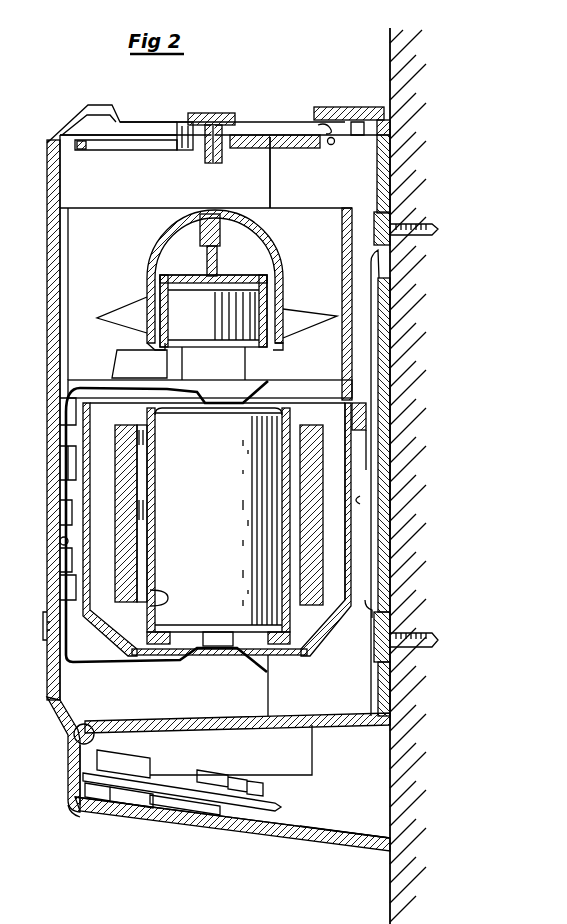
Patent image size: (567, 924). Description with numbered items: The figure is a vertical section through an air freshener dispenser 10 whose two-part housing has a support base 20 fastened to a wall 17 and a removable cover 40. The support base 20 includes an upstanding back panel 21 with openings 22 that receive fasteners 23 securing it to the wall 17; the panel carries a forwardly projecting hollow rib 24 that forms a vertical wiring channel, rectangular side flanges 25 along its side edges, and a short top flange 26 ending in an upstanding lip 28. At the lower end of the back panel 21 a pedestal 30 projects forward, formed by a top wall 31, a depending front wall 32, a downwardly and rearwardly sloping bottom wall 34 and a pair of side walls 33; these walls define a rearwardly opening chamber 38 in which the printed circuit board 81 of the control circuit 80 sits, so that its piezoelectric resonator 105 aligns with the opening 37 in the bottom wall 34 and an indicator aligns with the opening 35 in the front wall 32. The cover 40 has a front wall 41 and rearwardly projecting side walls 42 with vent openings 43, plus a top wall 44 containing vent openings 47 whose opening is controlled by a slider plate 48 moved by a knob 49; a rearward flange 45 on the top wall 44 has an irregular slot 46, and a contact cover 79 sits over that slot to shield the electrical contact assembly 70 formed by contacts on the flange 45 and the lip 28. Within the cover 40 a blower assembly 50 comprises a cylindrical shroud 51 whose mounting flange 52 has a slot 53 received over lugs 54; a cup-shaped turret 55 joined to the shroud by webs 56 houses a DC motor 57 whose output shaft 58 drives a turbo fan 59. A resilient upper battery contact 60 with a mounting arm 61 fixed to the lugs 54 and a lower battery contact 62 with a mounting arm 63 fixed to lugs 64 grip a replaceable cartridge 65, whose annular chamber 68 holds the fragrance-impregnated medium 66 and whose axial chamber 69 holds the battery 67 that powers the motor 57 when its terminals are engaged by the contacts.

The air freshener dispenser 10 is at (306, 68).
The wall 17 is at (390, 42).
The support base 20 is at (88, 812).
The back panel 21 is at (380, 615).
The openings 22 is at (388, 273).
The fasteners 23 is at (413, 218).
The hollow rib 24 is at (376, 507).
The side flanges 25 is at (270, 188).
The top flange 26 is at (374, 142).
The lip 28 is at (352, 136).
The pedestal 30 is at (232, 834).
The top wall 31 is at (161, 719).
The front wall 32 is at (68, 800).
The side walls 33 is at (260, 760).
The bottom wall 34 is at (276, 842).
The opening 35 is at (68, 766).
The opening 37 is at (170, 823).
The chamber 38 is at (334, 824).
The cover 40 is at (47, 318).
The front wall 41 is at (47, 346).
The side walls 42 is at (97, 182).
The vent openings 43 is at (48, 642).
The top wall 44 is at (181, 122).
The flange 45 is at (285, 134).
The slot 46 is at (323, 131).
The vent openings 47 is at (131, 122).
The slider plate 48 is at (187, 150).
The knob 49 is at (213, 113).
The blower assembly 50 is at (85, 201).
The shroud 51 is at (353, 340).
The mounting flange 52 is at (62, 412).
The slot 53 is at (62, 458).
The lugs 54 is at (82, 479).
The turret 55 is at (277, 285).
The webs 56 is at (323, 382).
The DC motor 57 is at (176, 302).
The output shaft 58 is at (218, 258).
The turbo fan 59 is at (174, 232).
The battery contact 60 is at (100, 392).
The mounting arm 61 is at (62, 515).
The battery contact 62 is at (108, 662).
The mounting arm 63 is at (60, 541).
The lugs 64 is at (78, 610).
The cartridge 65 is at (352, 556).
The medium 66 is at (323, 480).
The battery 67 is at (200, 547).
The annular chamber 68 is at (330, 580).
The axial chamber 69 is at (152, 596).
The electrical contact assembly 70 is at (331, 145).
The contact cover 79 is at (351, 107).
The control circuit 80 is at (178, 769).
The printed circuit board 81 is at (284, 805).
The piezoelectric resonator 105 is at (147, 806).